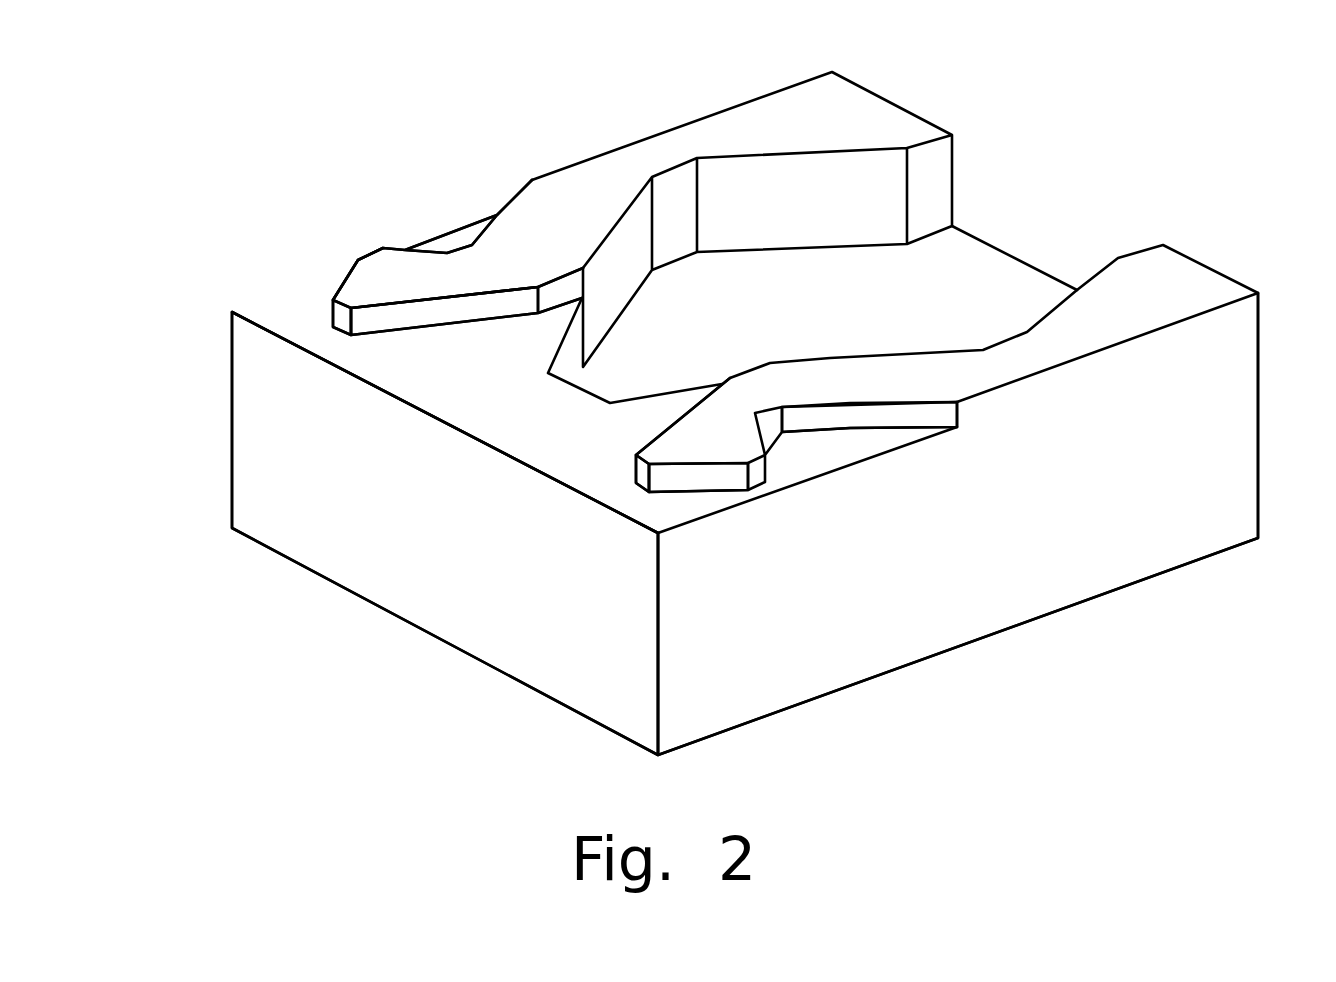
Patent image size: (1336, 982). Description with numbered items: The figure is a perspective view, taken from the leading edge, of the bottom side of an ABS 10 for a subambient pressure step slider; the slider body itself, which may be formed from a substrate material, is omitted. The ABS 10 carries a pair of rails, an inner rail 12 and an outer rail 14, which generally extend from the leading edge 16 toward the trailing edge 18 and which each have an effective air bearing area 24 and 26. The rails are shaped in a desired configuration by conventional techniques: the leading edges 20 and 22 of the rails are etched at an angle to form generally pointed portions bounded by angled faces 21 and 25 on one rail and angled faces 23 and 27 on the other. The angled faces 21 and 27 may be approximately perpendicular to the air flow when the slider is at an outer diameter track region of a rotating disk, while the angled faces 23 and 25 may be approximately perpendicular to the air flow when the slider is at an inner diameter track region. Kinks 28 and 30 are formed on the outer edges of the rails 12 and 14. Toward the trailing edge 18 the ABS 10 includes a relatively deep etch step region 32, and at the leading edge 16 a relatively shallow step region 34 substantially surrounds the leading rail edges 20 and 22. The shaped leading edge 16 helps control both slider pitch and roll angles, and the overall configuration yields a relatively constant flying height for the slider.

The ABS 10 is at (745, 397).
The inner rail 12 is at (1217, 270).
The outer rail 14 is at (863, 85).
The leading edge 16 is at (232, 393).
The trailing edge 18 is at (1260, 393).
The leading edge of rail 20 is at (642, 480).
The angled face 21 is at (670, 427).
The leading edge of rail 22 is at (342, 320).
The angled face 23 is at (455, 313).
The effective air bearing area 24 is at (987, 392).
The angled face 25 is at (718, 480).
The effective air bearing area 26 is at (580, 162).
The angled face 27 is at (342, 283).
The kink 28 is at (830, 427).
The kink 30 is at (437, 249).
The deep etch step region 32 is at (987, 292).
The shallow step region 34 is at (525, 465).